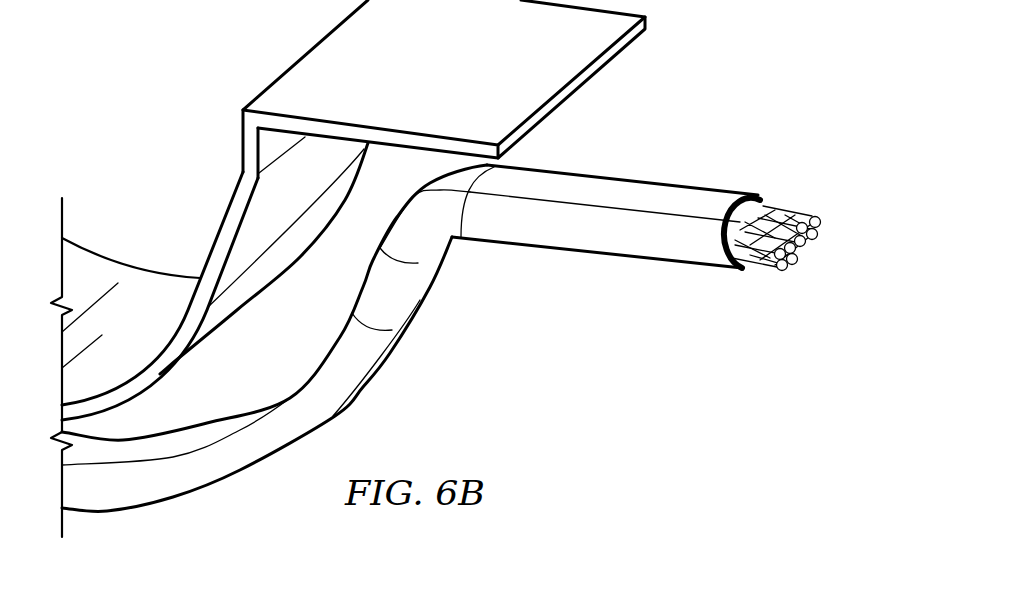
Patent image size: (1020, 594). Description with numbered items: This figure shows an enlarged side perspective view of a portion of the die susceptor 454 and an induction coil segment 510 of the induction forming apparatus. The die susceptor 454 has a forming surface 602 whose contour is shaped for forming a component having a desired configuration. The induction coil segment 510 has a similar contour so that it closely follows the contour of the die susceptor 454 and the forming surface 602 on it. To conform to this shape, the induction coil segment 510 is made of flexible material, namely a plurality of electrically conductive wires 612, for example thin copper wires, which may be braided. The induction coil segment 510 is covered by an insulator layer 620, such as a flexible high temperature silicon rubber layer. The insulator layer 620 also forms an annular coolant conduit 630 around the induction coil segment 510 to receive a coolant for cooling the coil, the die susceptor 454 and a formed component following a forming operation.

The die susceptor 454 is at (152, 268).
The forming surface 602 is at (93, 267).
The induction coil segment 510 is at (474, 328).
The insulator layer 620 is at (640, 193).
The annular coolant conduit 630 is at (732, 264).
The electrically conductive wires 612 is at (826, 251).